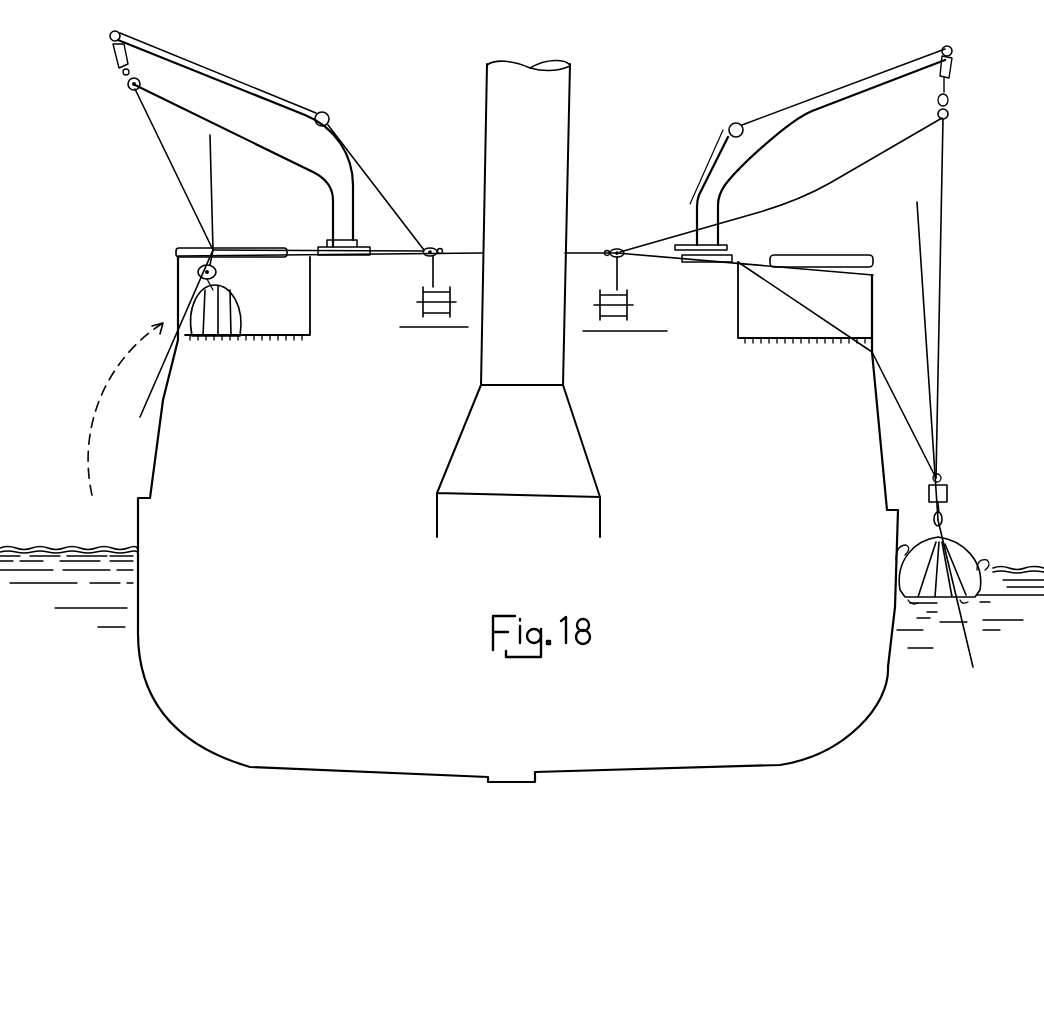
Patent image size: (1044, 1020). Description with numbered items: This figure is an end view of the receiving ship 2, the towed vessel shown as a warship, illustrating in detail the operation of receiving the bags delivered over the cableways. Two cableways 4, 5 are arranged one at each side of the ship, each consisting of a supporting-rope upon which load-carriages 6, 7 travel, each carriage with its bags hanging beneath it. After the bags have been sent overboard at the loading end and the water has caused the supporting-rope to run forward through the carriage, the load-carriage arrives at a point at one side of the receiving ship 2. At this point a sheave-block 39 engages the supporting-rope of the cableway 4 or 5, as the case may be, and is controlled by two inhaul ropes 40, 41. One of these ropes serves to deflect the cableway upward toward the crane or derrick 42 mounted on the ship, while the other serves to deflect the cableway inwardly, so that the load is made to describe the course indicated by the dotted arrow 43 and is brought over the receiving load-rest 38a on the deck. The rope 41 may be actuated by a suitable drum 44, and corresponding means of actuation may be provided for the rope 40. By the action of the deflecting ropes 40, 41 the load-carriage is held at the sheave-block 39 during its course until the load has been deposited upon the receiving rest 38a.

The consuming or receiving ship 2 is at (518, 421).
The cableway 4 is at (214, 218).
The cableway 5 is at (920, 285).
The load-carriage 6 is at (218, 285).
The load-carriage 7 is at (947, 518).
The receiving load-rest 38a is at (815, 338).
The sheave-block 39 is at (198, 272).
The inhaul rope 40 is at (299, 255).
The inhaul rope 41 is at (178, 182).
The crane or derrick 42 is at (230, 87).
The dotted arrow 43 is at (132, 345).
The drum 44 is at (422, 302).